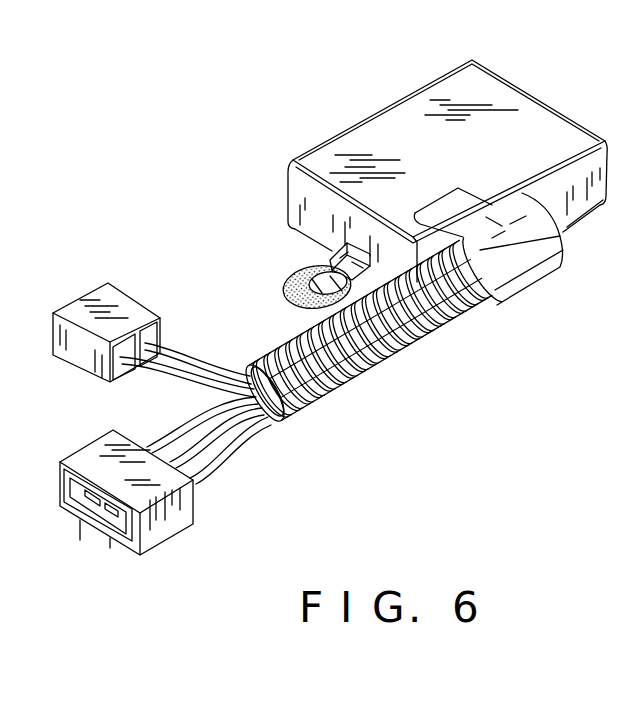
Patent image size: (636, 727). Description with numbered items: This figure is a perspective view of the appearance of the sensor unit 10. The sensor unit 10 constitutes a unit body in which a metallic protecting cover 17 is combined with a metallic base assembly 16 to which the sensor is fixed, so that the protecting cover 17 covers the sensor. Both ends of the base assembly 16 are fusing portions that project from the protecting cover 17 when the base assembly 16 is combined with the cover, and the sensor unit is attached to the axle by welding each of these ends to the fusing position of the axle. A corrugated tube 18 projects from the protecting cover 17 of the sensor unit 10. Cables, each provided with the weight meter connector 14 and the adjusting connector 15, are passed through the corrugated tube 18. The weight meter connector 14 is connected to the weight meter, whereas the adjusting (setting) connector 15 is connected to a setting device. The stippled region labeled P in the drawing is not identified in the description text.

The sensor unit 10 is at (292, 118).
The protecting cover 17 is at (512, 97).
The base assembly 16 is at (330, 258).
The sealing plug / grommet P is at (283, 292).
The corrugated tube 18 is at (373, 367).
The weight meter connector 14 is at (120, 300).
The adjusting connector 15 is at (188, 520).